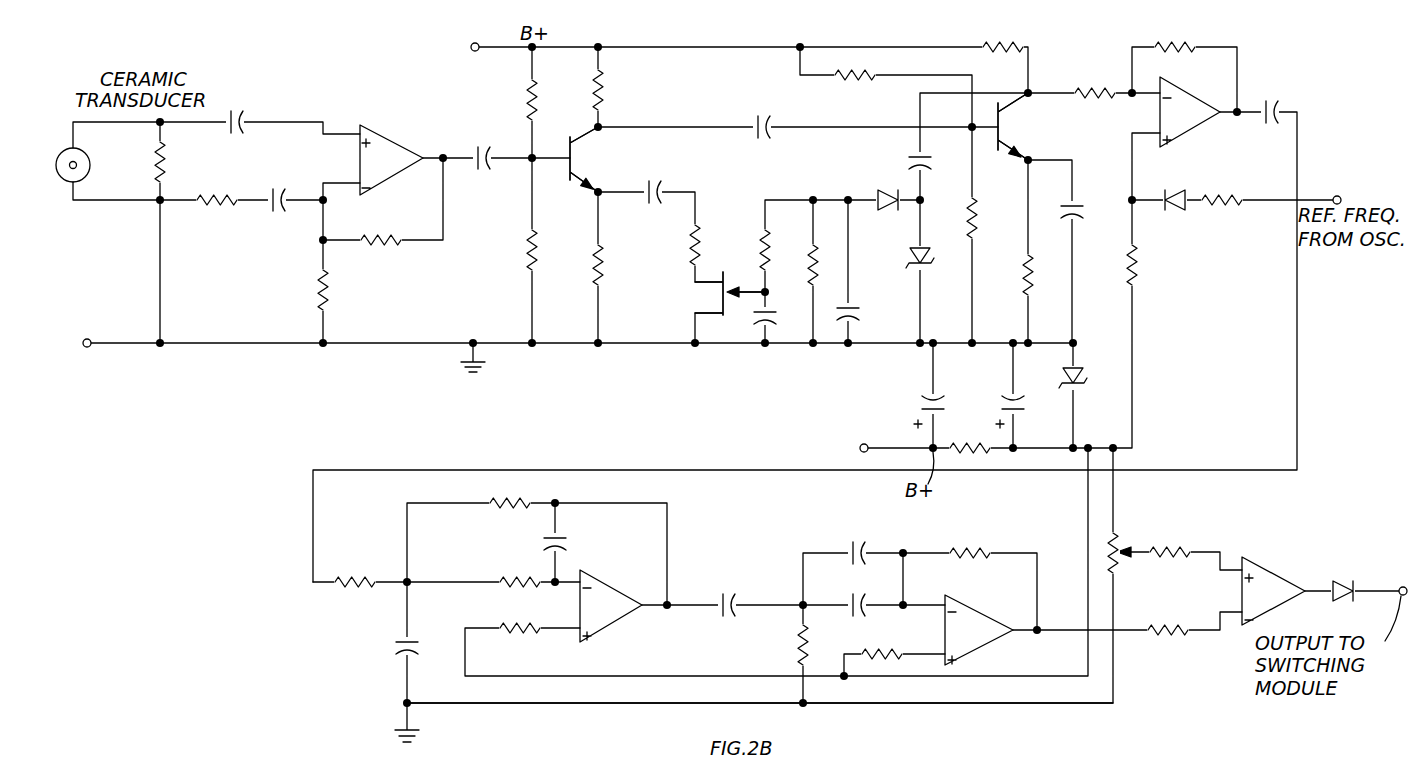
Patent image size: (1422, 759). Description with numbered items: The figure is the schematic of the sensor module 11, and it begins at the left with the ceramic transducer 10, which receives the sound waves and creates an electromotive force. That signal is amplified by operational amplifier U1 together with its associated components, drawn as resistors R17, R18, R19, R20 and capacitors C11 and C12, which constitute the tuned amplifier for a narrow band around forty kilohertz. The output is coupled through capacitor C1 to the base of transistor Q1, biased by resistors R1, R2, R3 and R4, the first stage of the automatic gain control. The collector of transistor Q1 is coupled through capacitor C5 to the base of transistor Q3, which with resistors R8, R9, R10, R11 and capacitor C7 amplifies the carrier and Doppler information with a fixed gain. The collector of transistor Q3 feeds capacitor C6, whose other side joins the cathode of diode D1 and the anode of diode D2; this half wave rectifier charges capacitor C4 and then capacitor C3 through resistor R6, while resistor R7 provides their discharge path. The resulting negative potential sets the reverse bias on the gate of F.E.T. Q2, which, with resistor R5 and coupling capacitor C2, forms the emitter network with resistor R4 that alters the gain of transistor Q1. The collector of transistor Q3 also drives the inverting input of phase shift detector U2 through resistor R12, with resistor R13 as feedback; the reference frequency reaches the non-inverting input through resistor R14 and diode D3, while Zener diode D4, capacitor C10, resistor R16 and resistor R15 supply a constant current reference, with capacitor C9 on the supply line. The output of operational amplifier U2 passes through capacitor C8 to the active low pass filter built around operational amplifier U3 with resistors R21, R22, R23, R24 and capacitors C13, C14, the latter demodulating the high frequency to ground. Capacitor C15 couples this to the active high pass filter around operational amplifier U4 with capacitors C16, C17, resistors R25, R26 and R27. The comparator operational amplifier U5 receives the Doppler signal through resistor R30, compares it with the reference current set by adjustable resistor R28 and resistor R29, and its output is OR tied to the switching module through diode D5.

The ceramic transducer 10 is at (75, 103).
The signal processing circuit 11 is at (664, 756).
The resistor R1 is at (519, 100).
The resistor R2 is at (583, 89).
The resistor R3 is at (517, 249).
The resistor R4 is at (581, 265).
The resistor R5 is at (679, 245).
The resistor R6 is at (749, 250).
The resistor R7 is at (799, 265).
The resistor R8 is at (957, 218).
The resistor R9 is at (1014, 275).
The resistor R10 is at (855, 63).
The resistor R11 is at (1003, 36).
The resistor R12 is at (1095, 81).
The resistor R13 is at (1174, 36).
The resistor R14 is at (1222, 188).
The resistor R15 is at (1151, 264).
The resistor R16 is at (970, 438).
The resistor R17 is at (140, 162).
The resistor R18 is at (217, 189).
The resistor R19 is at (305, 290).
The resistor R20 is at (381, 229).
The resistor R21 is at (355, 569).
The resistor R22 is at (519, 569).
The resistor R23 is at (510, 492).
The resistor R24 is at (520, 617).
The resistor R25 is at (780, 645).
The resistor R26 is at (882, 643).
The resistor R27 is at (970, 541).
The resistor R28 is at (1131, 545).
The resistor R29 is at (1169, 562).
The resistor R30 is at (1168, 618).
The capacitor C1 is at (480, 147).
The capacitor C2 is at (657, 178).
The capacitor C3 is at (751, 315).
The capacitor C4 is at (863, 313).
The capacitor C5 is at (762, 113).
The capacitor C6 is at (903, 159).
The capacitor C7 is at (1086, 210).
The capacitor C8 is at (1270, 99).
The electrolytic capacitor C9 is at (915, 403).
The capacitor C10 is at (992, 402).
The capacitor C11 is at (281, 187).
The capacitor C12 is at (234, 133).
The capacitor C13 is at (537, 541).
The capacitor C14 is at (388, 645).
The capacitor C15 is at (731, 593).
The capacitor C16 is at (860, 593).
The capacitor C17 is at (860, 541).
The diode D1 is at (886, 210).
The diode D2 is at (904, 258).
The diode D3 is at (1172, 185).
The Zener diode D4 is at (1088, 374).
The diode D5 is at (1343, 576).
The transistor Q1 is at (598, 159).
The F.E.T. Q2 is at (715, 293).
The transistor Q3 is at (1027, 126).
The operational amplifier U1 is at (391, 160).
The phase shift detector U2 is at (1190, 112).
The active low pass filter operational amplifier U3 is at (611, 606).
The active high pass filter operational amplifier U4 is at (979, 630).
The comparator operational amplifier U5 is at (1273, 591).